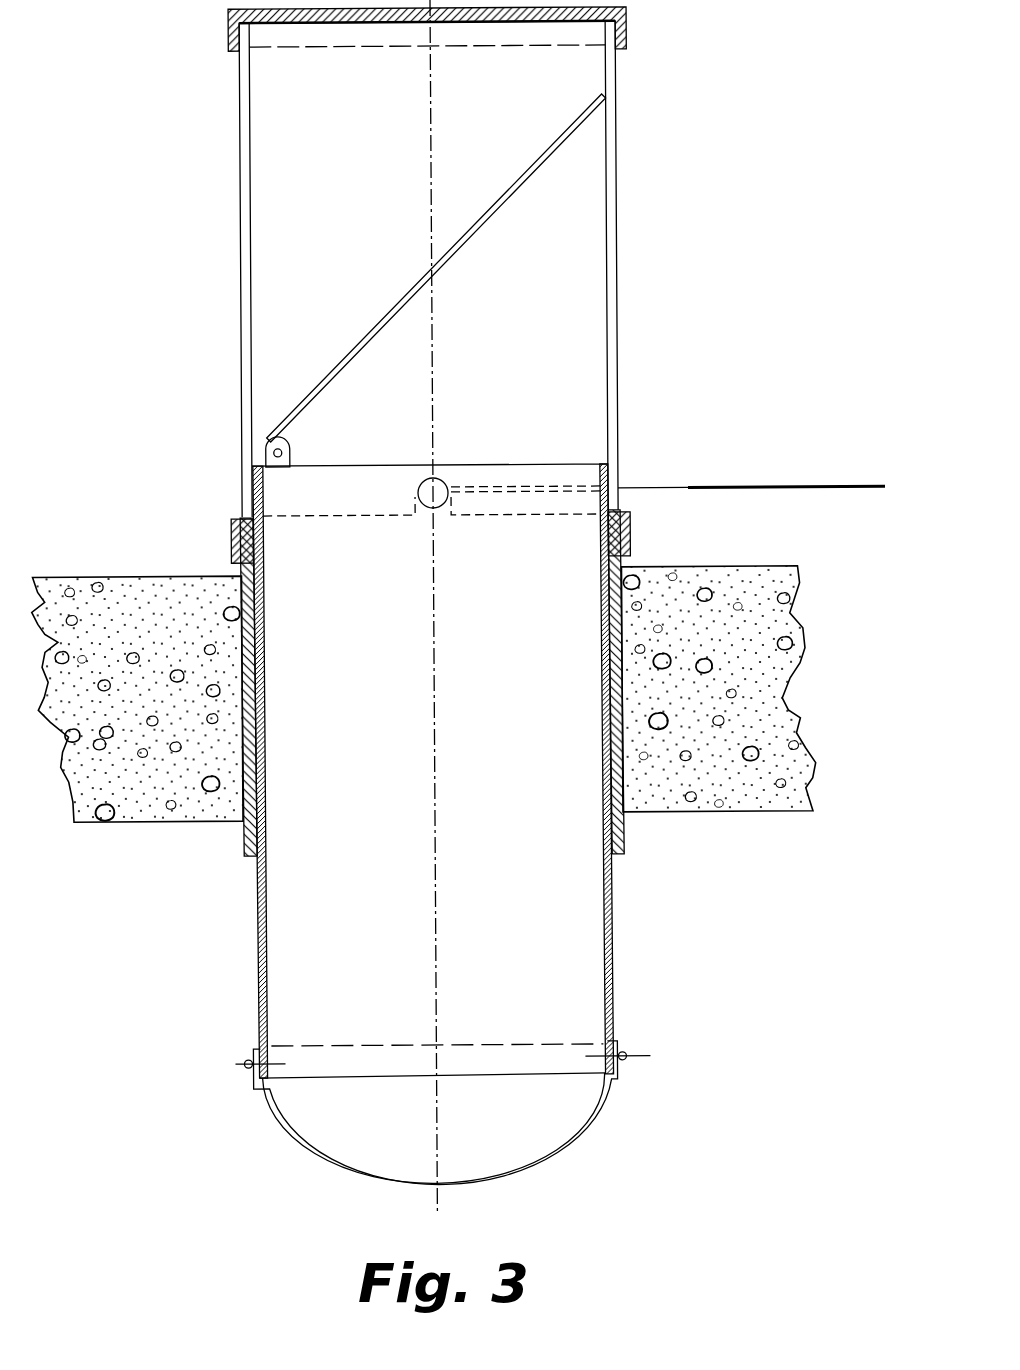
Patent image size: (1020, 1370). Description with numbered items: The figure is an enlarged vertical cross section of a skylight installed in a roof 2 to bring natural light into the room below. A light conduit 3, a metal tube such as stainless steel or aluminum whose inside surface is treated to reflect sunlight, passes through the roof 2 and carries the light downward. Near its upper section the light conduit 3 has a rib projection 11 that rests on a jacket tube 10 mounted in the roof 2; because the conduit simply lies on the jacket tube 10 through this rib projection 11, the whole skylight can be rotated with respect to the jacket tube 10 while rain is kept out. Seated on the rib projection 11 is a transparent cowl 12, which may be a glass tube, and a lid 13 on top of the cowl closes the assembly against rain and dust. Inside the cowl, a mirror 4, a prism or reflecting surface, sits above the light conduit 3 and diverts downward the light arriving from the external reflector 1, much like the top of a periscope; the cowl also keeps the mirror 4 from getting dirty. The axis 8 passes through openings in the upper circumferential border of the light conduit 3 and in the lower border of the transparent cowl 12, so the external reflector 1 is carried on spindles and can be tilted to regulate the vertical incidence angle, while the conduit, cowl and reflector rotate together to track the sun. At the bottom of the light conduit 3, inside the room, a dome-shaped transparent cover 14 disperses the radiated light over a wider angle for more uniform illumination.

The external reflector 1 is at (736, 486).
The roof 2 is at (113, 575).
The light conduit 3 is at (617, 962).
The mirror 4 is at (540, 178).
The axis 8 is at (415, 491).
The jacket tube 10 is at (620, 840).
The rib projection 11 is at (627, 530).
The transparent cowl 12 is at (616, 271).
The lid 13 is at (626, 18).
The transparent cover 14 is at (572, 1138).